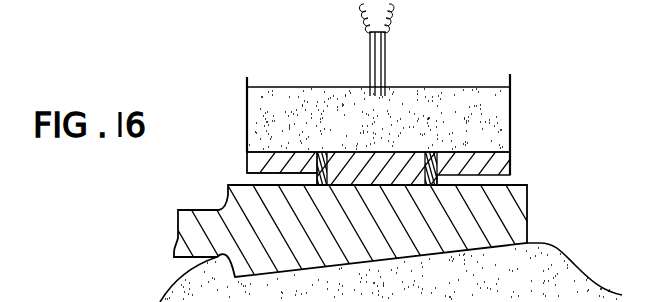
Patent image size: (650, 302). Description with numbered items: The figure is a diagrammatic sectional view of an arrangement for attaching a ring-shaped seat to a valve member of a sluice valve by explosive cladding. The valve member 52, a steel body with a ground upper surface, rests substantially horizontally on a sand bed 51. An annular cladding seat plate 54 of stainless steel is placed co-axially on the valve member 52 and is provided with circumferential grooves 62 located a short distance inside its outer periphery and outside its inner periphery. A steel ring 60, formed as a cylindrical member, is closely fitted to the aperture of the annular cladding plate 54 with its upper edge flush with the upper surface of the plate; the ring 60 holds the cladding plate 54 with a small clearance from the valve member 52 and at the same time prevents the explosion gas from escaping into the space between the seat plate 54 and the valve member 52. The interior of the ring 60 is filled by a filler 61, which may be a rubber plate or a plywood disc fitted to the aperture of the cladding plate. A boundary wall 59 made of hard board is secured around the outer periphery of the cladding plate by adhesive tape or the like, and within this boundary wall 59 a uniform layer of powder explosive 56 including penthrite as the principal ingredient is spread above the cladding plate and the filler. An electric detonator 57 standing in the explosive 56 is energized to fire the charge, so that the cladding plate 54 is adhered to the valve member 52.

The sand bed 51 is at (515, 287).
The valve member 52 is at (515, 207).
The cladding seat plate 54 is at (500, 162).
The powder explosive 56 is at (318, 98).
The electric detonator 57 is at (386, 43).
The boundary wall 59 is at (248, 78).
The ring 60 is at (429, 158).
The filler 61 is at (356, 164).
The circumferential grooves 62 is at (264, 158).